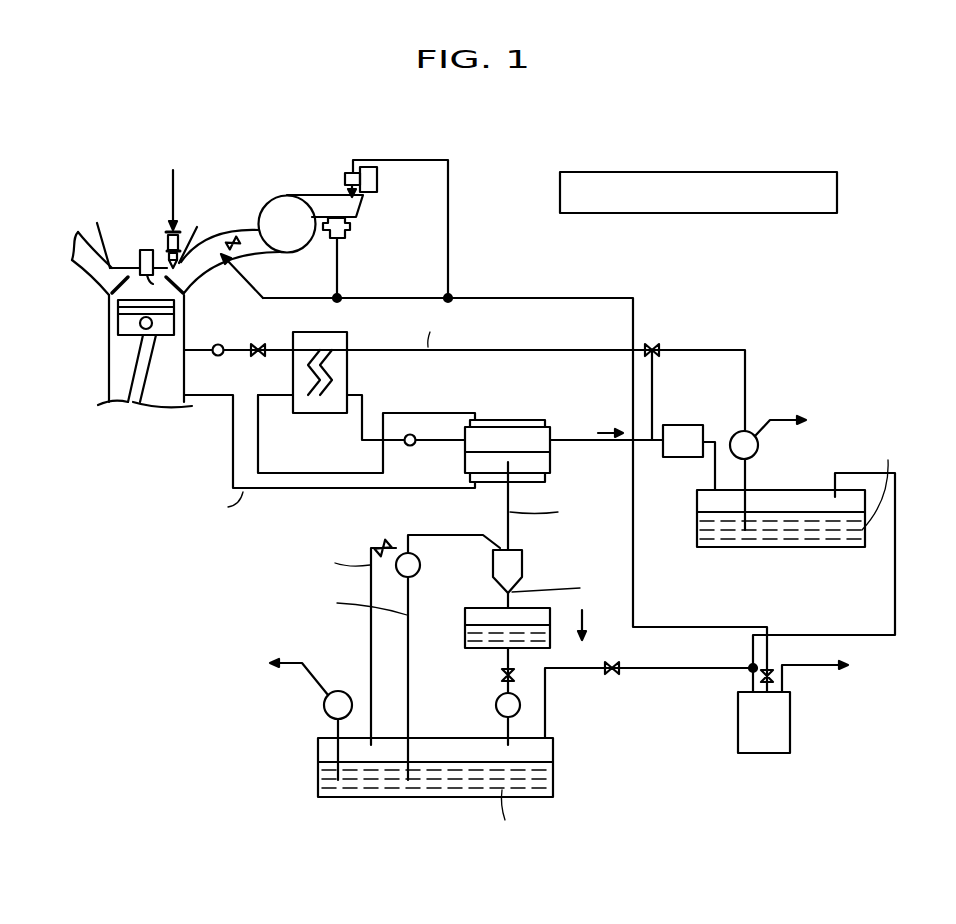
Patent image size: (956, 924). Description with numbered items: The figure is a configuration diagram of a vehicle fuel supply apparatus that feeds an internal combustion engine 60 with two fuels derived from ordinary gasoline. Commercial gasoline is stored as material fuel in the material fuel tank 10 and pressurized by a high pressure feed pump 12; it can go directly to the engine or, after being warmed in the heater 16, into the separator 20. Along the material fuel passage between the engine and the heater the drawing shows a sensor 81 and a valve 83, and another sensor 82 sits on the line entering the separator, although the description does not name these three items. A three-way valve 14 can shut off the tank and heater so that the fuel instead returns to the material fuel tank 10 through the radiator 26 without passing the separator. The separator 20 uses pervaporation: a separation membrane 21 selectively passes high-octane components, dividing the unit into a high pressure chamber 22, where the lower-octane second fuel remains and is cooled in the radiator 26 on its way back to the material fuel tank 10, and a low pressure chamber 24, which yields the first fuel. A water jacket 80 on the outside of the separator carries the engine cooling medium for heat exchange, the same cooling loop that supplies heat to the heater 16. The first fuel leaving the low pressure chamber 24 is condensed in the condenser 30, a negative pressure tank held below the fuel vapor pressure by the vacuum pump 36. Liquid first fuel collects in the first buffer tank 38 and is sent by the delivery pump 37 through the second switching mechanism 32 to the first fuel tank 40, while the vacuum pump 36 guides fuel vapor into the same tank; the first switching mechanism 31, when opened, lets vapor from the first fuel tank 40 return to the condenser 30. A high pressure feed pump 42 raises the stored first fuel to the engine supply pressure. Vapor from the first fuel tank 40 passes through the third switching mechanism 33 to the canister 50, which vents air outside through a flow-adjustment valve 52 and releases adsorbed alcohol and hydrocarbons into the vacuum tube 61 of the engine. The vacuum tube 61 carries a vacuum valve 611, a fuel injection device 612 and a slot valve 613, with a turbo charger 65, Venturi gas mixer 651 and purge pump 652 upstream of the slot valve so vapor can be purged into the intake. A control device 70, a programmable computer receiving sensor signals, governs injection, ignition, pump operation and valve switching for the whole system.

The material fuel tank 10 is at (773, 490).
The high pressure feed pump 12 is at (759, 447).
The three-way valve 14 is at (652, 343).
The heater 16 is at (318, 415).
The separator 20 is at (513, 439).
The separation membrane 21 is at (490, 450).
The high pressure chamber 22 is at (528, 437).
The low pressure chamber 24 is at (493, 467).
The radiator 26 is at (683, 425).
The condenser 30 is at (523, 560).
The first switching mechanism 31 is at (385, 547).
The second switching mechanism 32 is at (500, 673).
The third switching mechanism 33 is at (612, 676).
The vacuum pump 36 is at (420, 567).
The delivery pump 37 is at (495, 705).
The first buffer tank 38 is at (465, 632).
The first fuel tank 40 is at (360, 797).
The high pressure feed pump 42 is at (324, 705).
The canister 50 is at (773, 755).
The flow-adjustment valve 52 is at (770, 668).
The internal combustion engine 60 is at (78, 220).
The vacuum tube 61 is at (203, 275).
The turbo charger 65 is at (287, 207).
The control device 70 is at (780, 172).
The water jacket 80 is at (543, 420).
The sensor 81 is at (222, 345).
The sensor 82 is at (410, 434).
The valve 83 is at (258, 343).
The vacuum valve 611 is at (197, 227).
The fuel injection device 612 is at (167, 237).
The slot valve 613 is at (237, 240).
The Venturi gas mixer 651 is at (355, 229).
The purge pump 652 is at (379, 195).